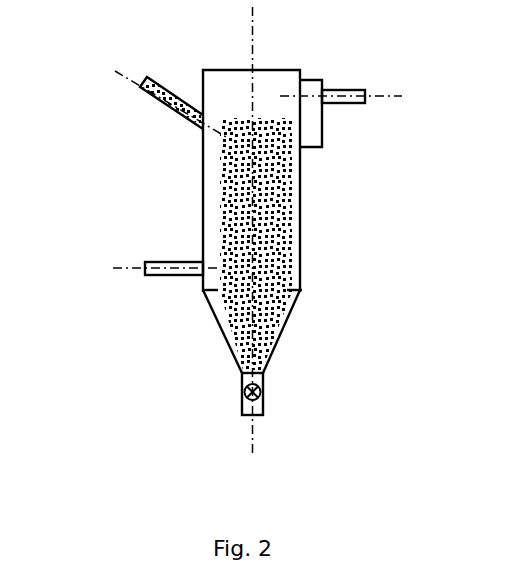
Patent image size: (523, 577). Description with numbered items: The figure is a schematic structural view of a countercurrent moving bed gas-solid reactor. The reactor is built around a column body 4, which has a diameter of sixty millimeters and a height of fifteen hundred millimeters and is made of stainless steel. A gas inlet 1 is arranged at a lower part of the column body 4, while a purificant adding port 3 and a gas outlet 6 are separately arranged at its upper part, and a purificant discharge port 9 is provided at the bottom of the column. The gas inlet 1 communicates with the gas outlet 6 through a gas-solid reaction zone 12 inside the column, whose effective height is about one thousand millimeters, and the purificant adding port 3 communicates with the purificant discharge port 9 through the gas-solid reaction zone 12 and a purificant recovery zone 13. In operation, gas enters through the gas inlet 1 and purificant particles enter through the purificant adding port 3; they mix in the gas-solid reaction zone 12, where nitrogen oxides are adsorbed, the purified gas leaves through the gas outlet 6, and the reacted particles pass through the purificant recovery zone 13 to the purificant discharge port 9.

The gas inlet 1 is at (145, 263).
The purificant adding port 3 is at (142, 90).
The column body 4 is at (215, 208).
The gas outlet 6 is at (320, 86).
The purificant discharge port 9 is at (263, 402).
The gas-solid reaction zone 12 is at (262, 178).
The purificant recovery zone 13 is at (277, 330).